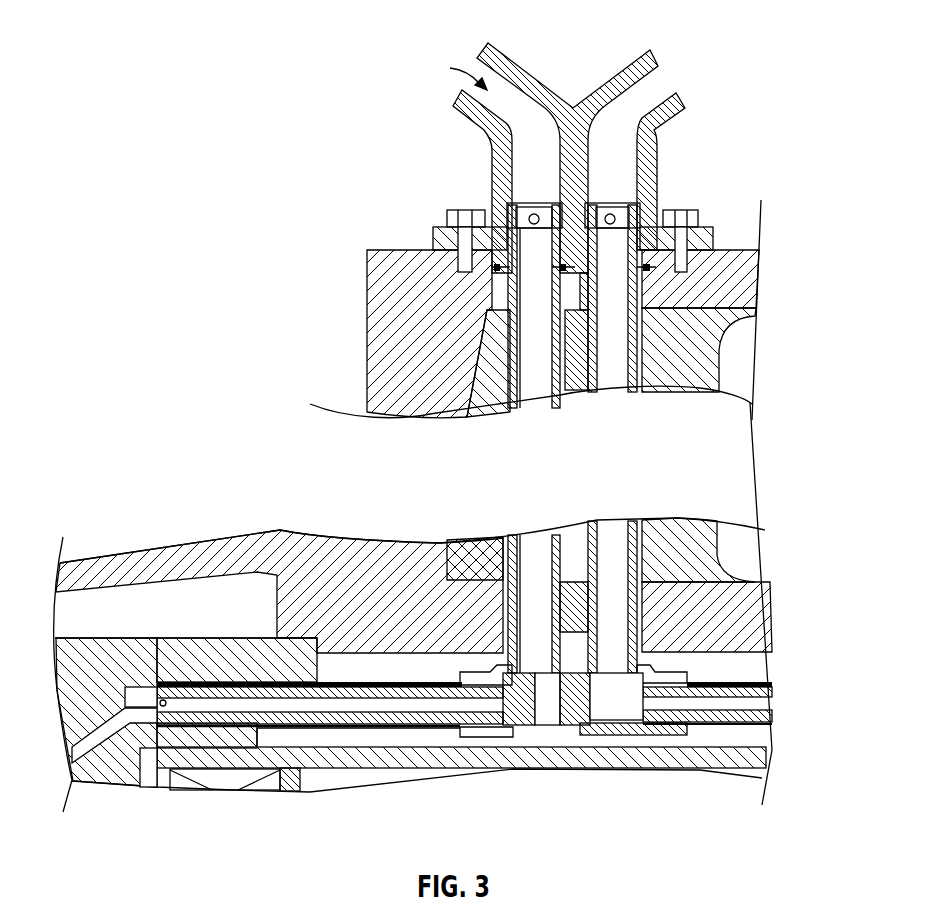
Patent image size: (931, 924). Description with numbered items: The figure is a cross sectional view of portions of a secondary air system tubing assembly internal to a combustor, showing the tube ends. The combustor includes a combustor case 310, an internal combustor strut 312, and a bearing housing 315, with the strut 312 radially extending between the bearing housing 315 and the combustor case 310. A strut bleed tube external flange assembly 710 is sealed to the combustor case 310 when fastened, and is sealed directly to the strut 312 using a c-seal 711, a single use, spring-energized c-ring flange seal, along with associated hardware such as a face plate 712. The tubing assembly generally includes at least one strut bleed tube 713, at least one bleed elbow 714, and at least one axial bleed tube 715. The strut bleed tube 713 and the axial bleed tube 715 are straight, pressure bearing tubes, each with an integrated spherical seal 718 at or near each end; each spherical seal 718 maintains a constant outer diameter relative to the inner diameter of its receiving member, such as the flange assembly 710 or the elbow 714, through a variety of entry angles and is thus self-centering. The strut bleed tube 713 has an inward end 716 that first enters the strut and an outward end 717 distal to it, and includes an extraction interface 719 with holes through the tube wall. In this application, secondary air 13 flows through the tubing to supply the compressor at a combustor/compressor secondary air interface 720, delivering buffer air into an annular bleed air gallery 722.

The secondary air 13 is at (455, 72).
The strut bleed tube external flange assembly 710 is at (533, 68).
The face plate 712 is at (567, 268).
The outward end 717 is at (536, 203).
The extraction interface 719 is at (508, 207).
The spherical seal 718 is at (505, 243).
The c-seal 711 is at (500, 270).
The strut bleed tube 713 is at (513, 365).
The combustor case 310 is at (745, 288).
The internal combustor strut 312 is at (712, 363).
The combustor/compressor secondary air interface 720 is at (72, 737).
The bleed air gallery 722 is at (140, 713).
The axial bleed tube 715 is at (272, 718).
The bearing housing 315 is at (343, 762).
The inward end 716 is at (507, 702).
The bleed elbow 714 is at (580, 716).